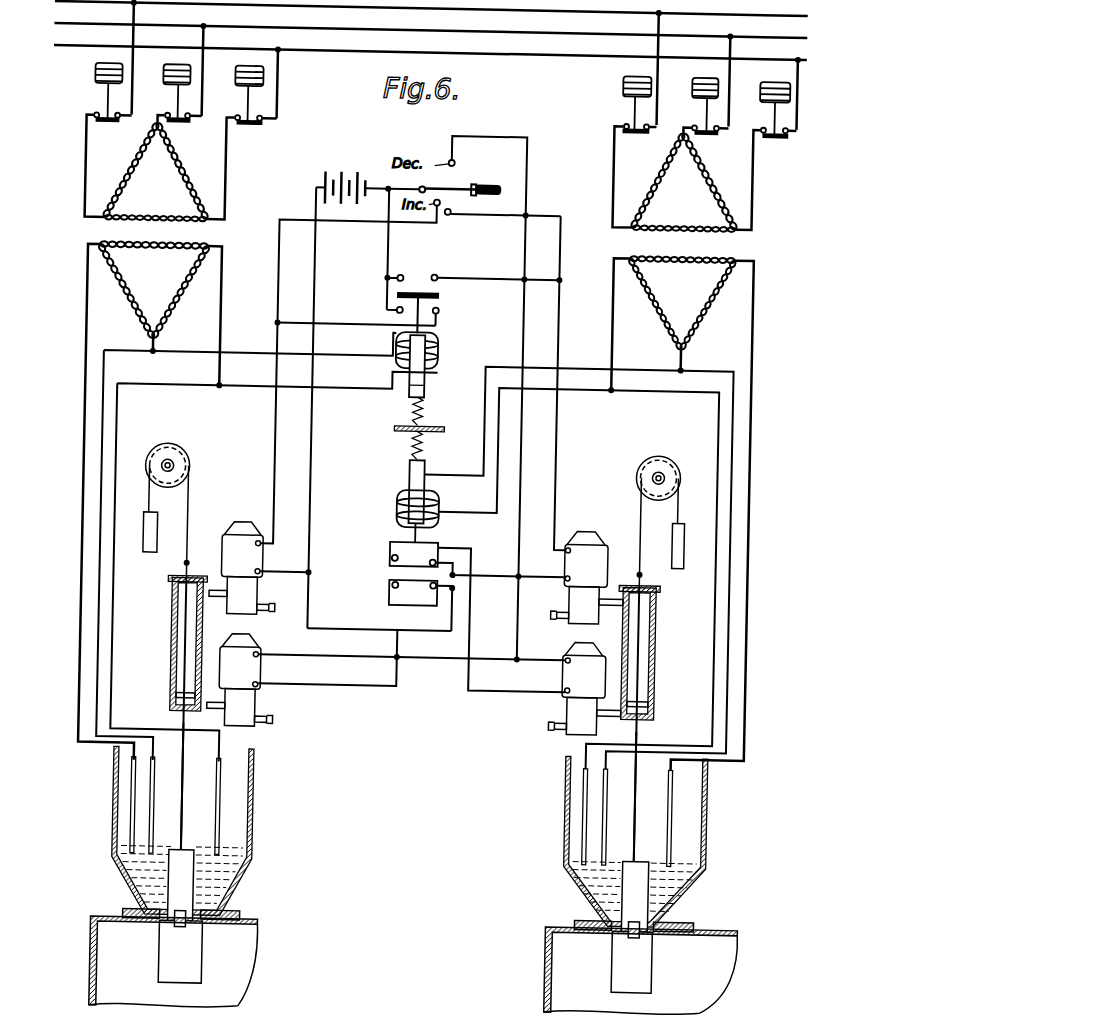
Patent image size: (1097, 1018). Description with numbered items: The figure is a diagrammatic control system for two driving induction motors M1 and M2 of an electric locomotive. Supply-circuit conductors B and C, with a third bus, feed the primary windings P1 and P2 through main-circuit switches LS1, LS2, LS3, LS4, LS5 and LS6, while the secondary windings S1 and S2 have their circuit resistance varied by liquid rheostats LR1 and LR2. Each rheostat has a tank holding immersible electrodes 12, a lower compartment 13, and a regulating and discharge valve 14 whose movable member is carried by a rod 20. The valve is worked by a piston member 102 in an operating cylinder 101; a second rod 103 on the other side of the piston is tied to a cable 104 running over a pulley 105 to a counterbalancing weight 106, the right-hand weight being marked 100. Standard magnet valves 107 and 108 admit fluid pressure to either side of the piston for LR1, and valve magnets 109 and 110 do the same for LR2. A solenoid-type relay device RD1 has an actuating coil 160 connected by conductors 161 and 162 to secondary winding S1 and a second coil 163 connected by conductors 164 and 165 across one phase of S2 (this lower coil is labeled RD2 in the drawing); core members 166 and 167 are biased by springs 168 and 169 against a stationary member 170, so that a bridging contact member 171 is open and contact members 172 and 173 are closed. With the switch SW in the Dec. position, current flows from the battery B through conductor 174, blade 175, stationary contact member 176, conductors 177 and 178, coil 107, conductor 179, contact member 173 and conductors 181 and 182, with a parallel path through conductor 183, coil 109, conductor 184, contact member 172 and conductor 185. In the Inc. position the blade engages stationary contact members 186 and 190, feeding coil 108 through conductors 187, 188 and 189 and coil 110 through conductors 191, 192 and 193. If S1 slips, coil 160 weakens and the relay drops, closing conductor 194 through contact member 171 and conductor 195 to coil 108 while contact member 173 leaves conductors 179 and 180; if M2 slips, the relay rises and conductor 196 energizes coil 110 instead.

The immersible plates or electrodes 12 is at (142, 840).
The lower compartment 13 is at (248, 947).
The regulating and discharge valve 14 is at (200, 910).
The rod 20 is at (192, 804).
The counterweight 100 is at (675, 539).
The operating cylinder 101 is at (176, 623).
The piston member 102 is at (182, 702).
The second rod 103 is at (187, 646).
The cord or cable 104 is at (192, 505).
The pulley 105 is at (176, 487).
The counterbalancing weight 106 is at (160, 530).
The standard magnet valve 107 is at (266, 671).
The standard magnet valve 108 is at (266, 559).
The operating valve magnet 109 is at (565, 677).
The operating valve magnet 110 is at (567, 573).
The actuating coil 160 is at (426, 374).
The conductor 161 is at (340, 358).
The conductor 162 is at (340, 391).
The second actuating coil 163 is at (398, 530).
The conductor 164 is at (587, 367).
The conductor 165 is at (600, 389).
The magnetizable core member 166 is at (426, 392).
The second core member 167 is at (426, 464).
The spring 168 is at (424, 414).
The spring 169 is at (424, 450).
The stationary member 170 is at (445, 431).
The bridging contact member 171 is at (440, 298).
The contact member 172 is at (392, 566).
The contact member 173 is at (393, 597).
The conductor 174 is at (403, 191).
The blade 175 is at (463, 191).
The stationary contact member 176 is at (468, 159).
The conductor 177 is at (522, 155).
The conductor 178 is at (492, 657).
The conductor 179 is at (340, 690).
The conductor 180 is at (452, 594).
The negative conductor 181 is at (443, 634).
The negative conductor 182 is at (312, 551).
The conductor 183 is at (537, 660).
The conductor 184 is at (458, 550).
The conductor 185 is at (494, 574).
The stationary contact member 186 is at (437, 206).
The conductor 187 is at (425, 224).
The conductor 188 is at (274, 343).
The conductor 189 is at (287, 578).
The stationary contact member 190 is at (446, 218).
The conductor 191 is at (498, 216).
The conductor 192 is at (557, 311).
The conductor 193 is at (555, 580).
The conductor 194 is at (385, 256).
The conductor 195 is at (437, 314).
The conductor 196 is at (483, 280).
The supply-circuit conductor / battery B is at (346, 34).
The supply-circuit conductor C is at (358, 55).
The main-circuit switch LS1 is at (100, 112).
The main-circuit switch LS2 is at (170, 112).
The main-circuit switch LS3 is at (236, 112).
The main-circuit switch LS4 is at (624, 115).
The main-circuit switch LS5 is at (694, 115).
The main-circuit switch LS6 is at (764, 114).
The primary winding P1 is at (182, 180).
The primary winding P2 is at (705, 186).
The secondary winding S1 is at (178, 318).
The secondary winding S2 is at (712, 306).
The driving induction motor M1 is at (66, 229).
The driving induction motor M2 is at (774, 247).
The solenoid-type relay device RD1 is at (438, 353).
The relay RD2 is at (398, 510).
The switch SW is at (507, 172).
The liquid rheostat LR1 is at (261, 855).
The liquid rheostat LR2 is at (716, 858).